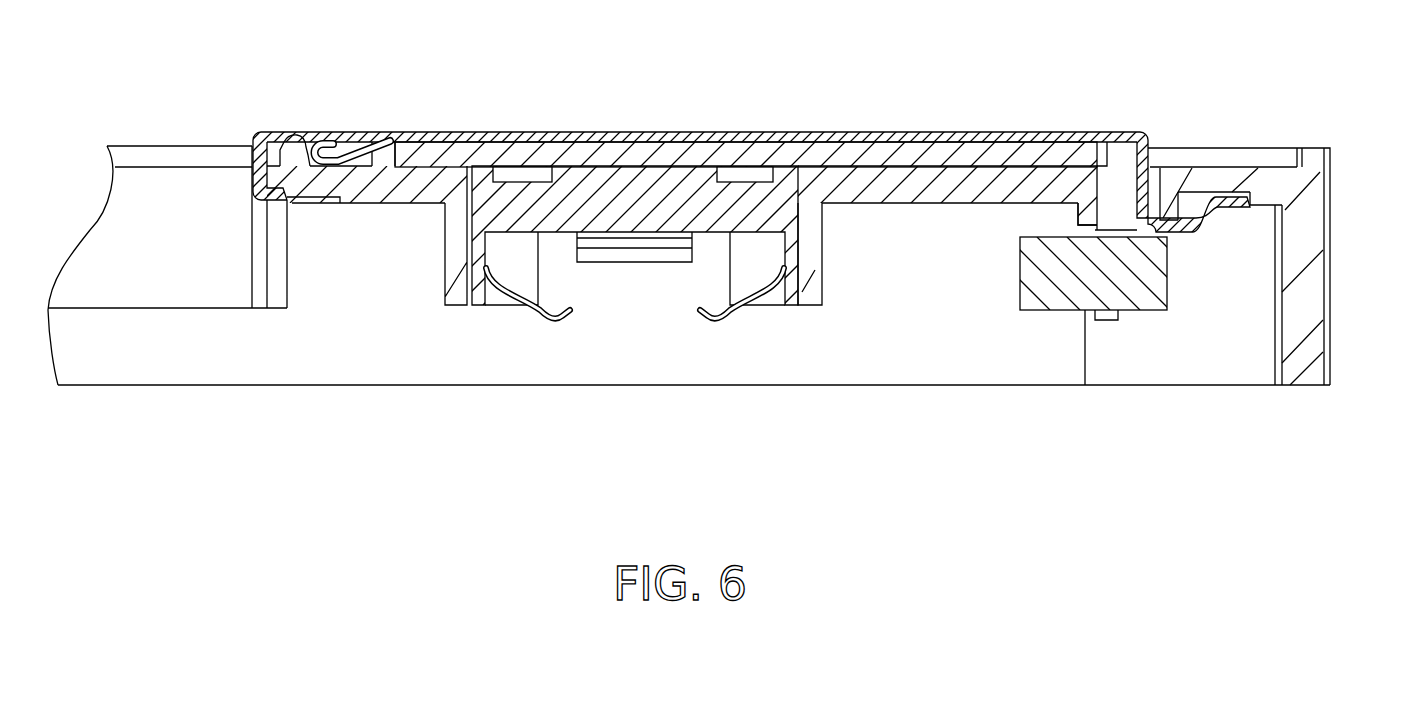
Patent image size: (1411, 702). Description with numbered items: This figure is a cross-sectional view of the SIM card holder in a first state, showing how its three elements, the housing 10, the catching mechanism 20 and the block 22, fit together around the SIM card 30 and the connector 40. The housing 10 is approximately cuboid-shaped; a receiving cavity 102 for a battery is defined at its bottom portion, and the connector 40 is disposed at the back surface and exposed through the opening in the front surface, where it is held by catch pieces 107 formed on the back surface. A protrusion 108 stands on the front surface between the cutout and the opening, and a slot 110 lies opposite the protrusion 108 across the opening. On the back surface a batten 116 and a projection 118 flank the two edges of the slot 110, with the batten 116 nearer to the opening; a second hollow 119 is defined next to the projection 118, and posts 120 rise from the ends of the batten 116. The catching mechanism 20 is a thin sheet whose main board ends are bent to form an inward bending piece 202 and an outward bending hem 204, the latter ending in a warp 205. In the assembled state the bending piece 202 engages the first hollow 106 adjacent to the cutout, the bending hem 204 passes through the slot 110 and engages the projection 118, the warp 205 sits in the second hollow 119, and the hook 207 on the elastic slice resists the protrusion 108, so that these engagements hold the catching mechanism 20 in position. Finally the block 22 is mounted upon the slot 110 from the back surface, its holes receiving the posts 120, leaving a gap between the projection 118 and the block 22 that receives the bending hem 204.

The housing 10 is at (1308, 217).
The catching mechanism 20 is at (944, 131).
The block 22 is at (1052, 290).
The SIM card 30 is at (706, 155).
The connector 40 is at (565, 208).
The receiving cavity 102 is at (197, 280).
The first hollow 106 is at (328, 203).
The catch piece 107 is at (815, 283).
The protrusion 108 is at (294, 147).
The slot 110 is at (1125, 177).
The batten 116 is at (1085, 212).
The projection 118 is at (1197, 233).
The second hollow 119 is at (1247, 205).
The post 120 is at (1108, 312).
The bending piece 202 is at (270, 227).
The bending hem 204 is at (1163, 217).
The warp 205 is at (1227, 200).
The hook 207 is at (318, 138).